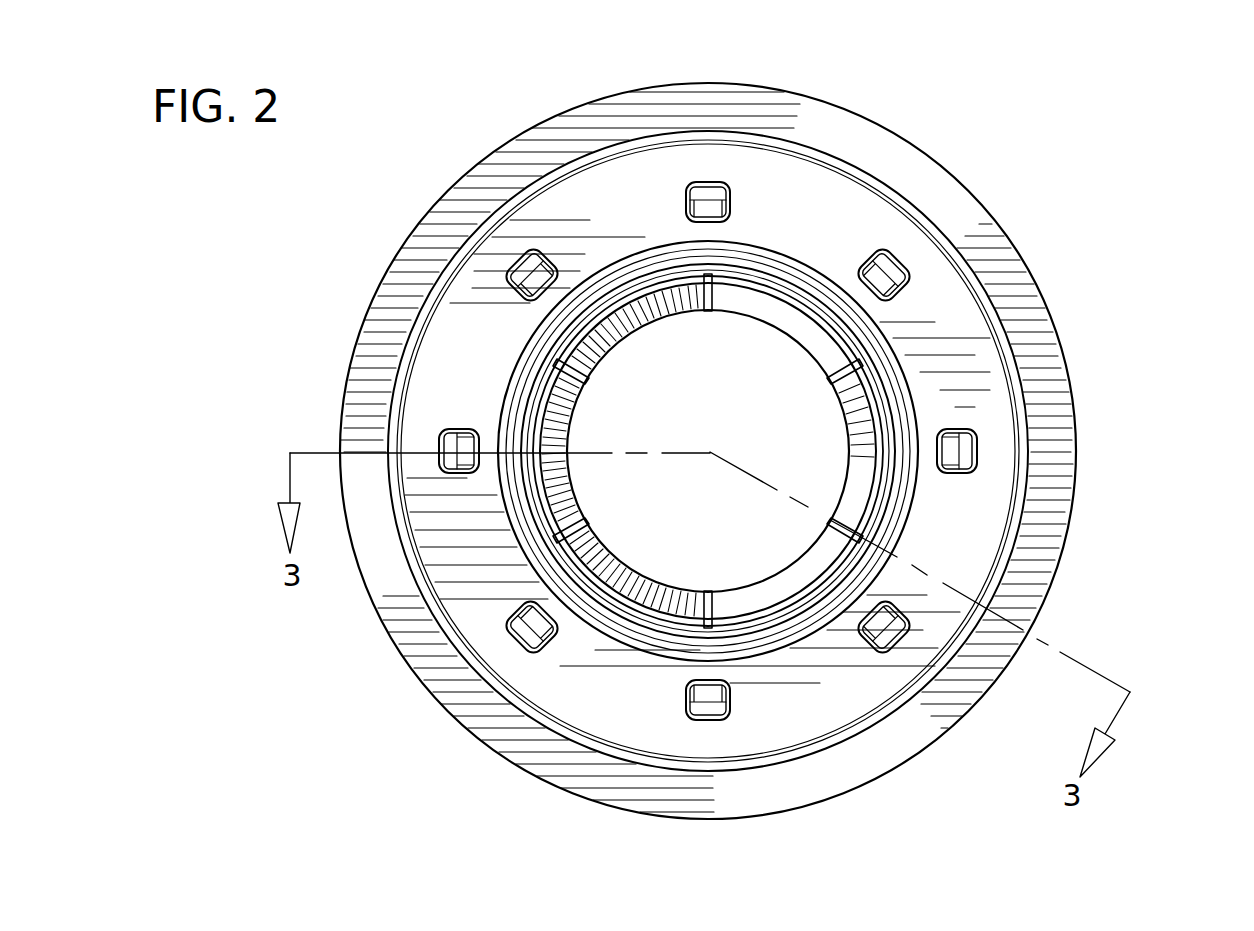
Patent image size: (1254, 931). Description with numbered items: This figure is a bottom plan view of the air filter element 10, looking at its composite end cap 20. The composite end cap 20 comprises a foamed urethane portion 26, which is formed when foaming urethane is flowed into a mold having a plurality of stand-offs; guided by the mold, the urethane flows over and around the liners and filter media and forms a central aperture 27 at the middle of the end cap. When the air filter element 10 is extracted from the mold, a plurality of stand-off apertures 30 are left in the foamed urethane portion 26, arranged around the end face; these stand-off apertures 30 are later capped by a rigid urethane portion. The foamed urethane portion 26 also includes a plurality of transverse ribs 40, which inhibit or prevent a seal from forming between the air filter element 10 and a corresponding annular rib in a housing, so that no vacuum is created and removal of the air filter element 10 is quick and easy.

The air filter element 10 is at (1120, 165).
The composite end cap 20 is at (1062, 458).
The foamed urethane portion 26 is at (887, 432).
The central aperture 27 is at (830, 473).
The stand-off apertures 30 is at (734, 198).
The transverse ribs 40 is at (760, 295).